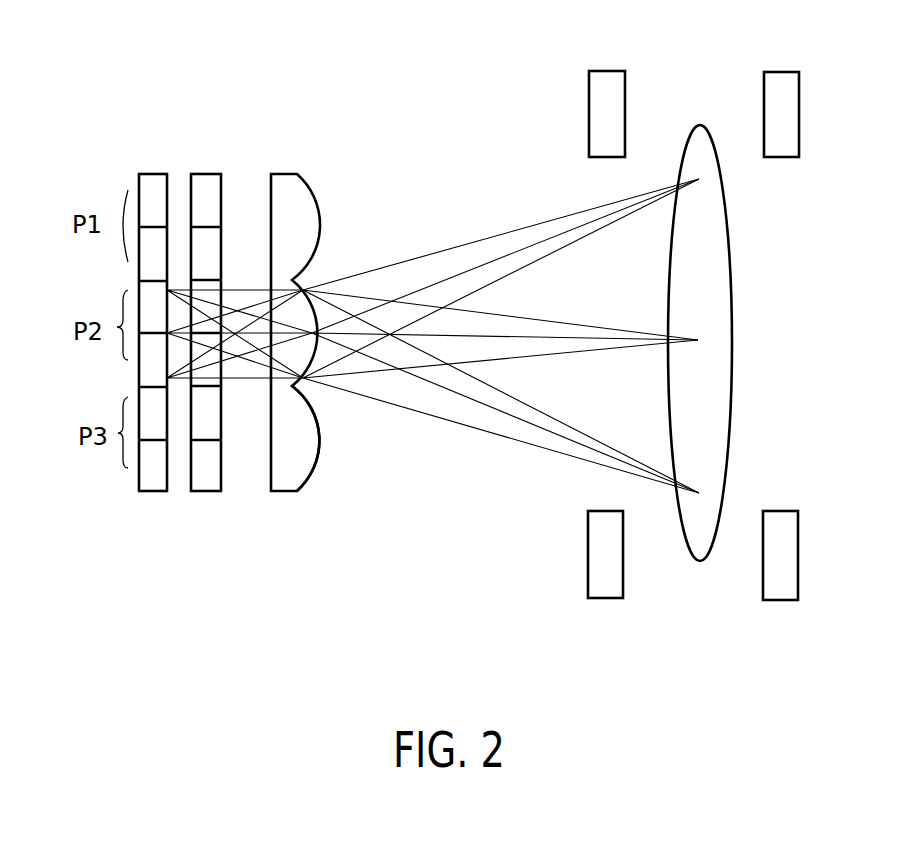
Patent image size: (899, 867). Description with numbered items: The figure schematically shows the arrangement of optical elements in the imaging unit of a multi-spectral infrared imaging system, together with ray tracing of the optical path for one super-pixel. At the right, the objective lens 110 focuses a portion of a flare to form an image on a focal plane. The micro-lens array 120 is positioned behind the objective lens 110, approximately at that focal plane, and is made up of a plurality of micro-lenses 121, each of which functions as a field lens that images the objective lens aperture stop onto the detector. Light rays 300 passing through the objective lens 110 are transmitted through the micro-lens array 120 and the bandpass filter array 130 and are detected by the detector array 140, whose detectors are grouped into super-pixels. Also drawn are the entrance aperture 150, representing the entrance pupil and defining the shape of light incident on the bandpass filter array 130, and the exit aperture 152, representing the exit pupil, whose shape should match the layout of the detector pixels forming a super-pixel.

The objective lens 110 is at (697, 565).
The micro-lens array 120 is at (279, 173).
The micro-lens 121 is at (300, 465).
The bandpass filter array 130 is at (203, 173).
The detector array 140 is at (153, 173).
The entrance aperture 150 is at (784, 70).
The exit aperture 152 is at (605, 70).
The light rays 300 is at (498, 229).